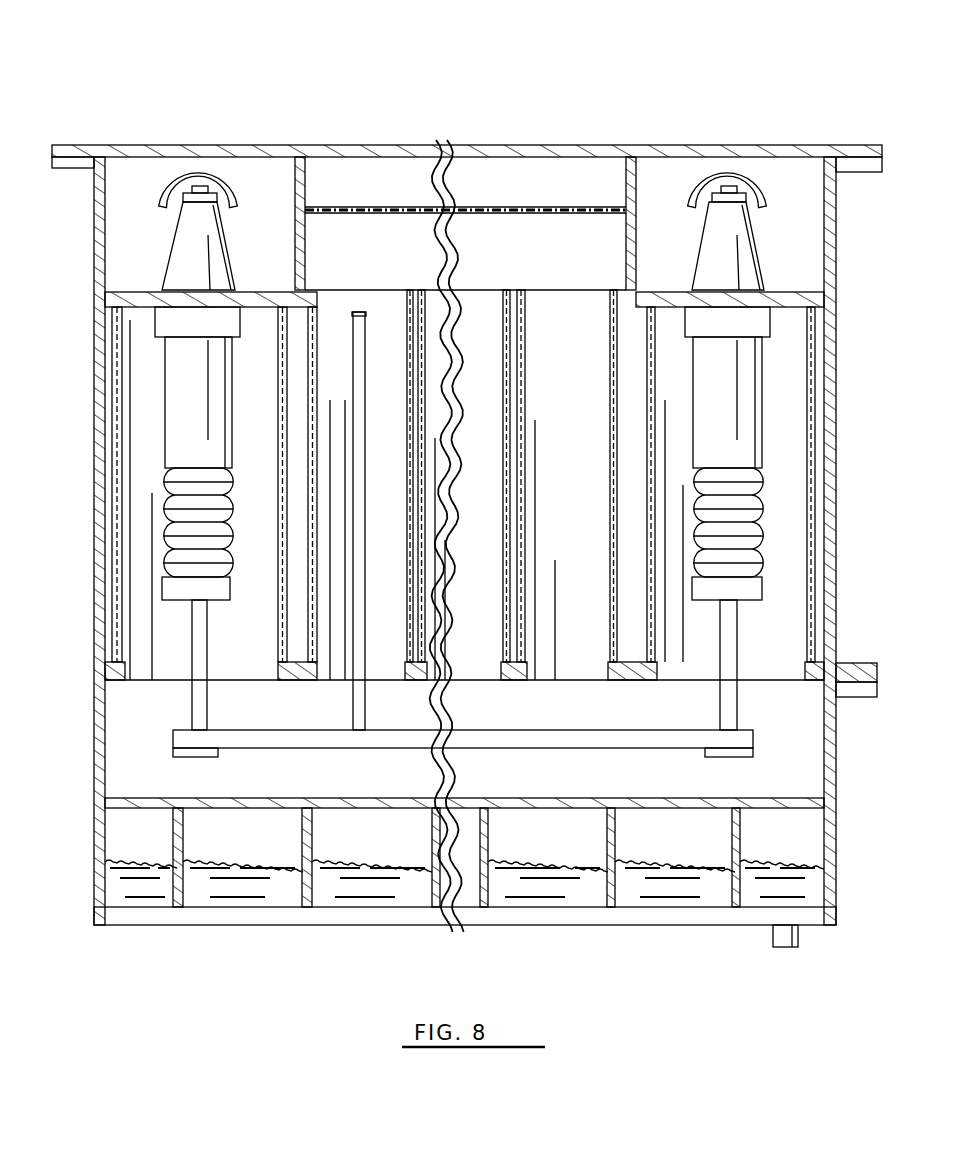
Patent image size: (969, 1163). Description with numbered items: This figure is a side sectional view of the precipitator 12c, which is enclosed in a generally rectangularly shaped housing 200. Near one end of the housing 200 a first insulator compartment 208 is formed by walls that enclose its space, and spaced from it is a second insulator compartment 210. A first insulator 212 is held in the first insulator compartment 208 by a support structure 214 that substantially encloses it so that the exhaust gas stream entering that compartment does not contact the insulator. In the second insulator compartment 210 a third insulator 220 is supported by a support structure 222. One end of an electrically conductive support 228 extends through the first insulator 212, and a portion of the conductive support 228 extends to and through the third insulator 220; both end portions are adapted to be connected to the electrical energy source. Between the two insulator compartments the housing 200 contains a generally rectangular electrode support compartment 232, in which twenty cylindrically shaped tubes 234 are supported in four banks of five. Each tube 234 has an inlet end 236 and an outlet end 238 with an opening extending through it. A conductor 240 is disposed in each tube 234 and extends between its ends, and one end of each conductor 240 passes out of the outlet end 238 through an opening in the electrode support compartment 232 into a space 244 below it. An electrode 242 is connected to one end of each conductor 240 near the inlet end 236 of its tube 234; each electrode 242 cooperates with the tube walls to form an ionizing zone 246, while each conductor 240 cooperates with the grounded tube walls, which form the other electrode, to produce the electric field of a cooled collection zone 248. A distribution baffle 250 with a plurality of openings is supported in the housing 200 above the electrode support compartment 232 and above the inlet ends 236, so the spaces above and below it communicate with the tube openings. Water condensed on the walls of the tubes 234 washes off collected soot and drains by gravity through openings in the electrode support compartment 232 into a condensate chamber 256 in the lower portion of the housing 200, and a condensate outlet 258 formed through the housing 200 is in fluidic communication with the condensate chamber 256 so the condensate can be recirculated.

The precipitator 12c is at (358, 92).
The housing 200 is at (637, 144).
The distribution baffle 250 is at (483, 207).
The first insulator compartment 208 is at (110, 340).
The second insulator compartment 210 is at (821, 360).
The first insulator 212 is at (171, 434).
The third insulator 220 is at (739, 431).
The support structure 222 is at (812, 572).
The support structure 214 is at (118, 637).
The ionizing zone 246 is at (339, 301).
The tube 234 is at (310, 617).
The inlet end 236 is at (318, 290).
The electrode support compartment 232 is at (479, 289).
The conductor 240 is at (364, 386).
The electrode 242 is at (360, 312).
The cooled collection zone 248 is at (376, 431).
The space 244 is at (525, 718).
The outlet end 238 is at (318, 681).
The electrically conductive support 228 is at (680, 744).
The condensate chamber 256 is at (786, 844).
The condensate outlet 258 is at (798, 943).